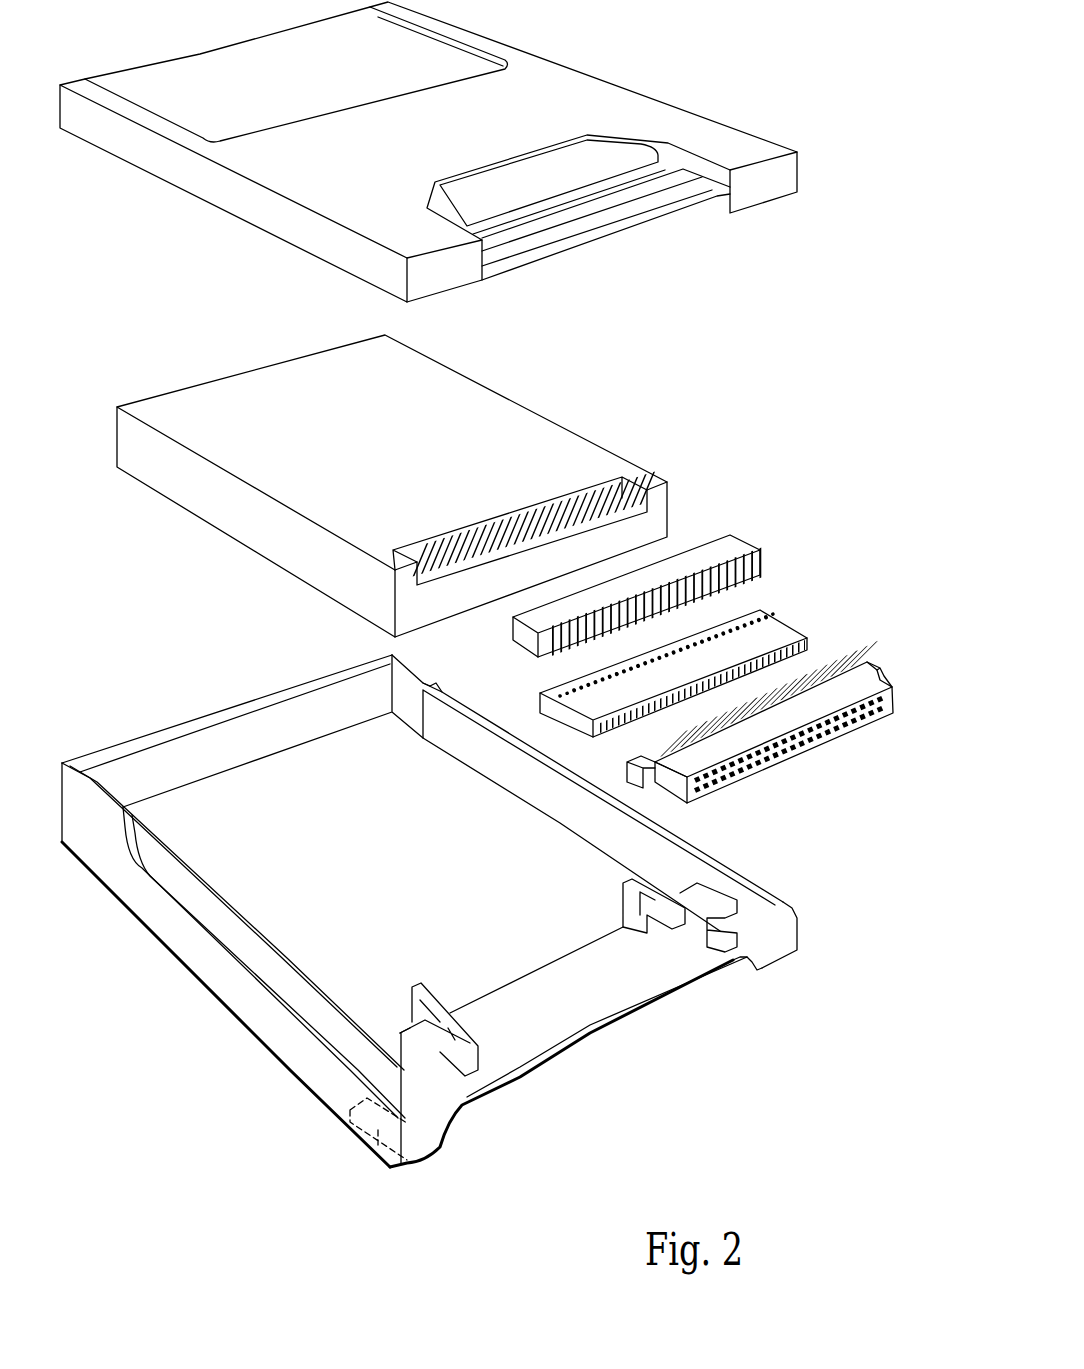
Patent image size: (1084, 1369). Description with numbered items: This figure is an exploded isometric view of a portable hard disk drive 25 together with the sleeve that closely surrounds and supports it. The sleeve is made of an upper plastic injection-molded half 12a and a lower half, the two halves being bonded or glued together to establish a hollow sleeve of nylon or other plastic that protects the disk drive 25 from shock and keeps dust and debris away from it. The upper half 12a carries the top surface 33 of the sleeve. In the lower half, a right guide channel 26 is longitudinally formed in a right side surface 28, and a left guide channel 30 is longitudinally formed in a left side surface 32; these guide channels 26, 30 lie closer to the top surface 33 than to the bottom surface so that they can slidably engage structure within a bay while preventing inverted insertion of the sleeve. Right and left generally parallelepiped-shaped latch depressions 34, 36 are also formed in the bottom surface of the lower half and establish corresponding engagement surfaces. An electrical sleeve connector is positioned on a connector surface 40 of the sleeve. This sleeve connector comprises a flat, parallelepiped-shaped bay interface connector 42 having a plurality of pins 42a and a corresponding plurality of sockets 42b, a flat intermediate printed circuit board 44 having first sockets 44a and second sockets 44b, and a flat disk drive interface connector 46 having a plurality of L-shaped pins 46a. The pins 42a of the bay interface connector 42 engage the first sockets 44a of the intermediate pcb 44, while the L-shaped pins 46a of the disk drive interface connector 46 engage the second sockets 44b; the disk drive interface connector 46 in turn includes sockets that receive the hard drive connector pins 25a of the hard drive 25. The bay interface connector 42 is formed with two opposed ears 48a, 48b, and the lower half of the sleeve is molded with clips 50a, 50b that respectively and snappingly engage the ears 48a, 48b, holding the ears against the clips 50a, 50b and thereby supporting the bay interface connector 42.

The upper half 12a is at (643, 103).
The top surface 33 is at (550, 73).
The portable hard disk drive 25 is at (532, 427).
The hard drive connector pins 25a is at (614, 497).
The disk drive interface connector 46 is at (708, 553).
The L-shaped pins 46a is at (773, 572).
The intermediate printed circuit board 44 is at (770, 620).
The first sockets 44a is at (810, 645).
The second sockets 44b is at (560, 693).
The bay interface connector 42 is at (890, 691).
The pins 42a is at (840, 660).
The sockets 42b is at (817, 740).
The ear 48a is at (653, 787).
The ear 48b is at (877, 665).
The right guide channel 26 is at (217, 915).
The right side surface 28 is at (112, 870).
The left guide channel 30 is at (470, 706).
The left side surface 32 is at (410, 663).
The right latch depression 34 is at (363, 1140).
The left latch depression 36 is at (748, 970).
The connector surface 40 is at (570, 1032).
The clip 50a is at (475, 1048).
The clip 50b is at (705, 930).